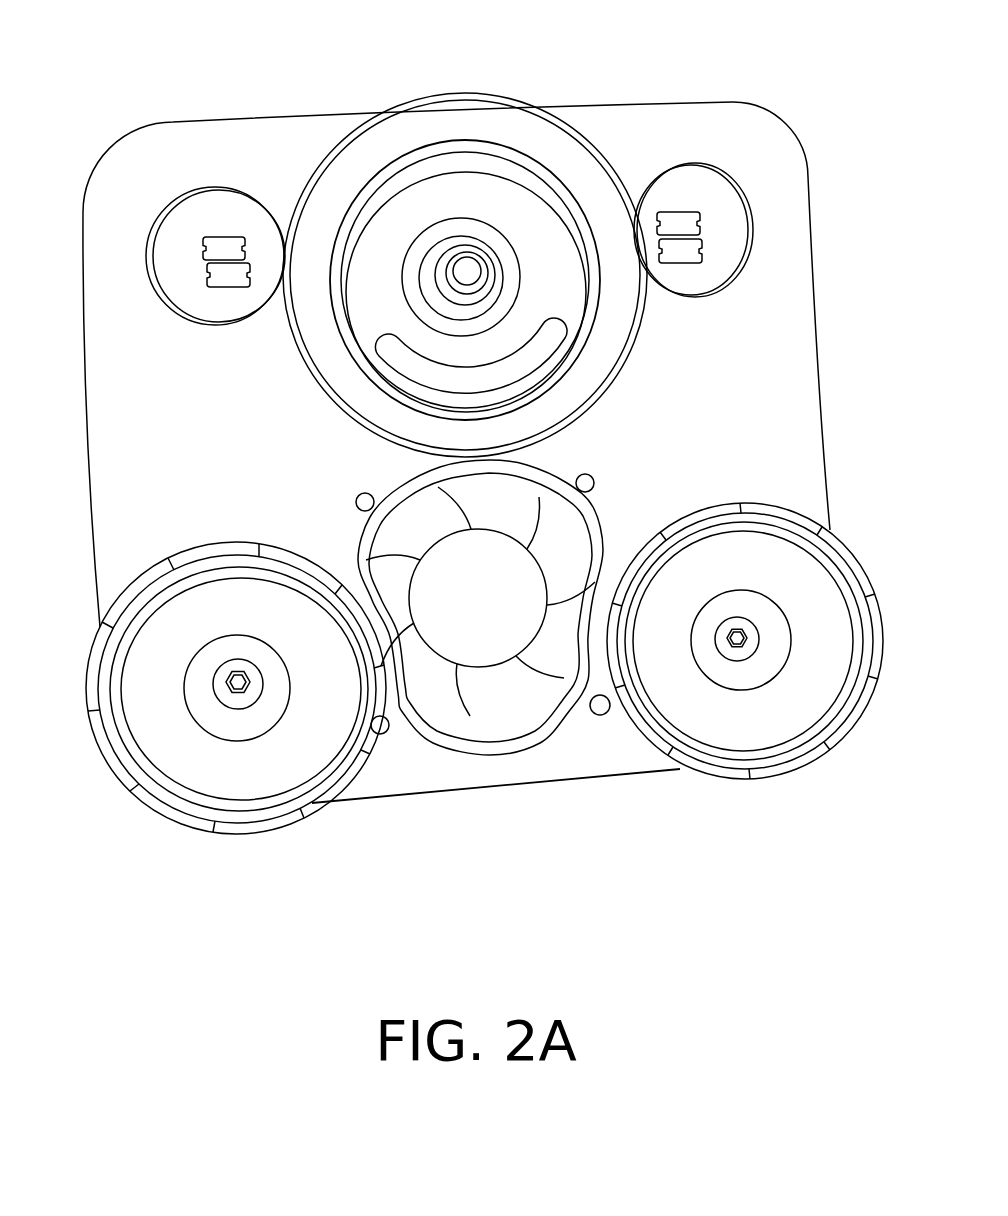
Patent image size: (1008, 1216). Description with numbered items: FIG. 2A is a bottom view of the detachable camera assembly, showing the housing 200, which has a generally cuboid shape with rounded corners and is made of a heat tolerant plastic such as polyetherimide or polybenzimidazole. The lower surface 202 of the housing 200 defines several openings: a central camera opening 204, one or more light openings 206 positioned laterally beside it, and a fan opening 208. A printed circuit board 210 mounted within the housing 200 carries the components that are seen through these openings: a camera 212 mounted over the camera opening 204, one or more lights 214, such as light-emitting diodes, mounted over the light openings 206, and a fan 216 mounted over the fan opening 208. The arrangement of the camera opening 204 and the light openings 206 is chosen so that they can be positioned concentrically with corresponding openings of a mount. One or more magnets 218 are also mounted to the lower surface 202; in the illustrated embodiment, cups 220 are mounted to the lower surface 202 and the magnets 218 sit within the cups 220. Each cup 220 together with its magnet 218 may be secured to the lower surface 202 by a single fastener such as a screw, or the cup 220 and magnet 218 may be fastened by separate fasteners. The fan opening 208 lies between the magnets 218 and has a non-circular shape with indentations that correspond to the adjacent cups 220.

The housing 200 is at (808, 217).
The lower surface 202 is at (793, 308).
The camera opening 204 is at (360, 228).
The light openings 206 is at (182, 187).
The fan opening 208 is at (425, 722).
The printed circuit board 210 is at (175, 258).
The camera 212 is at (466, 268).
The lights 214 is at (230, 237).
The fan 216 is at (425, 529).
The magnets 218 is at (168, 702).
The cups 220 is at (95, 657).